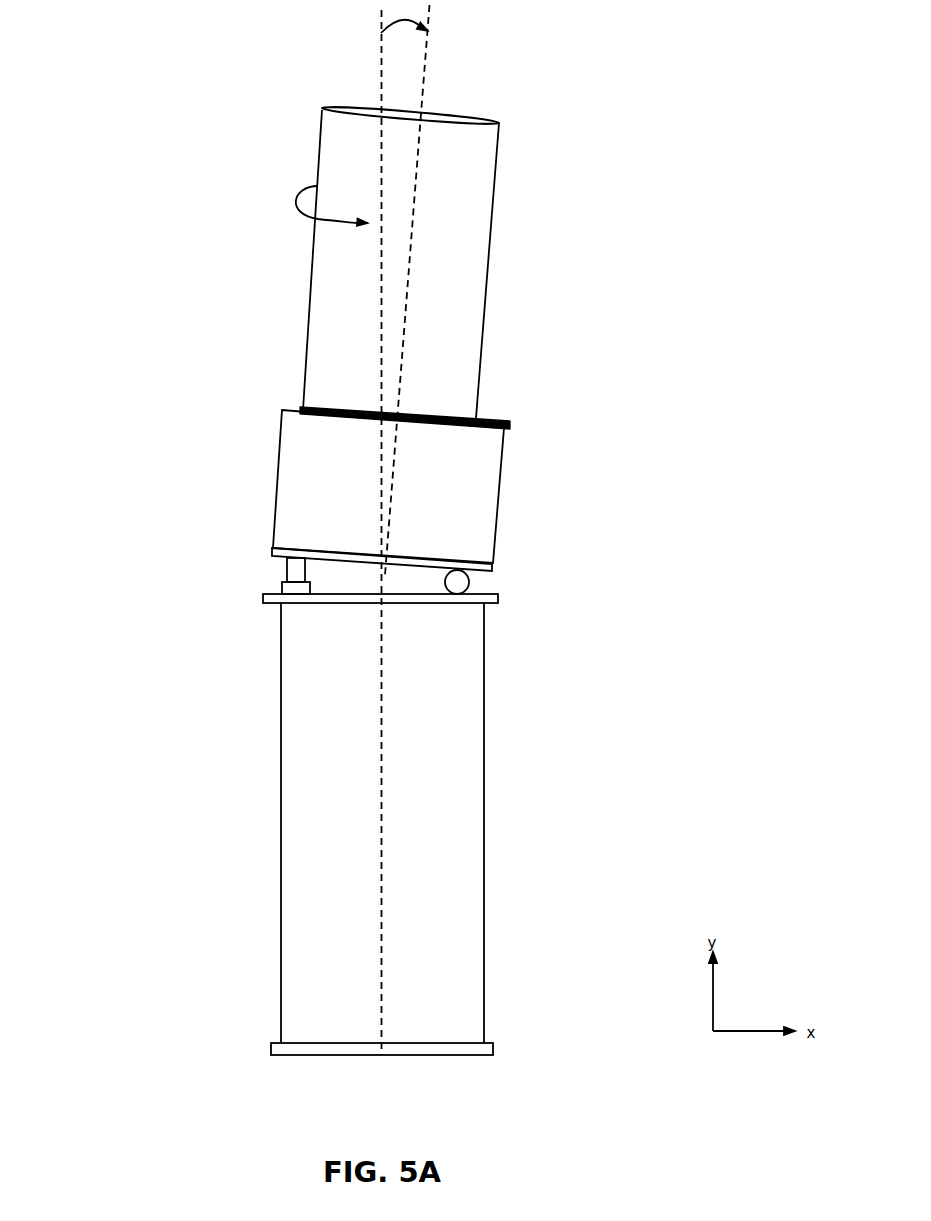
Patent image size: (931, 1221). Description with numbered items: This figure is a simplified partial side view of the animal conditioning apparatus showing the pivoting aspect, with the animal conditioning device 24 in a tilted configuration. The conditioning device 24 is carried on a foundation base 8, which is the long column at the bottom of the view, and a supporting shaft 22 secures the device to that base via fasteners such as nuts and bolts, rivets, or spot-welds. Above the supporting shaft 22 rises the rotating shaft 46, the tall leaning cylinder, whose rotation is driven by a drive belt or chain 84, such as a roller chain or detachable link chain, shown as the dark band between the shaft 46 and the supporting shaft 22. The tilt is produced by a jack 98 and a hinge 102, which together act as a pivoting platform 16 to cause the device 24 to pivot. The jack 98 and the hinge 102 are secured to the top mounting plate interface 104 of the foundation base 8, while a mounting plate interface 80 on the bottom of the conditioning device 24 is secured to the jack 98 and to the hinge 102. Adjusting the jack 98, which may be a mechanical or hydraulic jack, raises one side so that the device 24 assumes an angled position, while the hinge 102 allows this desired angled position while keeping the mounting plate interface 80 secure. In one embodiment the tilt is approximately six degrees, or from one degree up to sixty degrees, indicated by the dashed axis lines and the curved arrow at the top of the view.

The foundation base 8 is at (139, 740).
The pivoting platform 16 is at (252, 537).
The supporting shaft 22 is at (498, 502).
The animal conditioning device 24 is at (123, 482).
The rotating shaft 46 is at (493, 212).
The mounting plate interface 80 is at (298, 548).
The drive belt or chain 84 is at (488, 418).
The jack 98 is at (282, 568).
The hinge 102 is at (472, 589).
The top mounting plate interface 104 is at (268, 605).